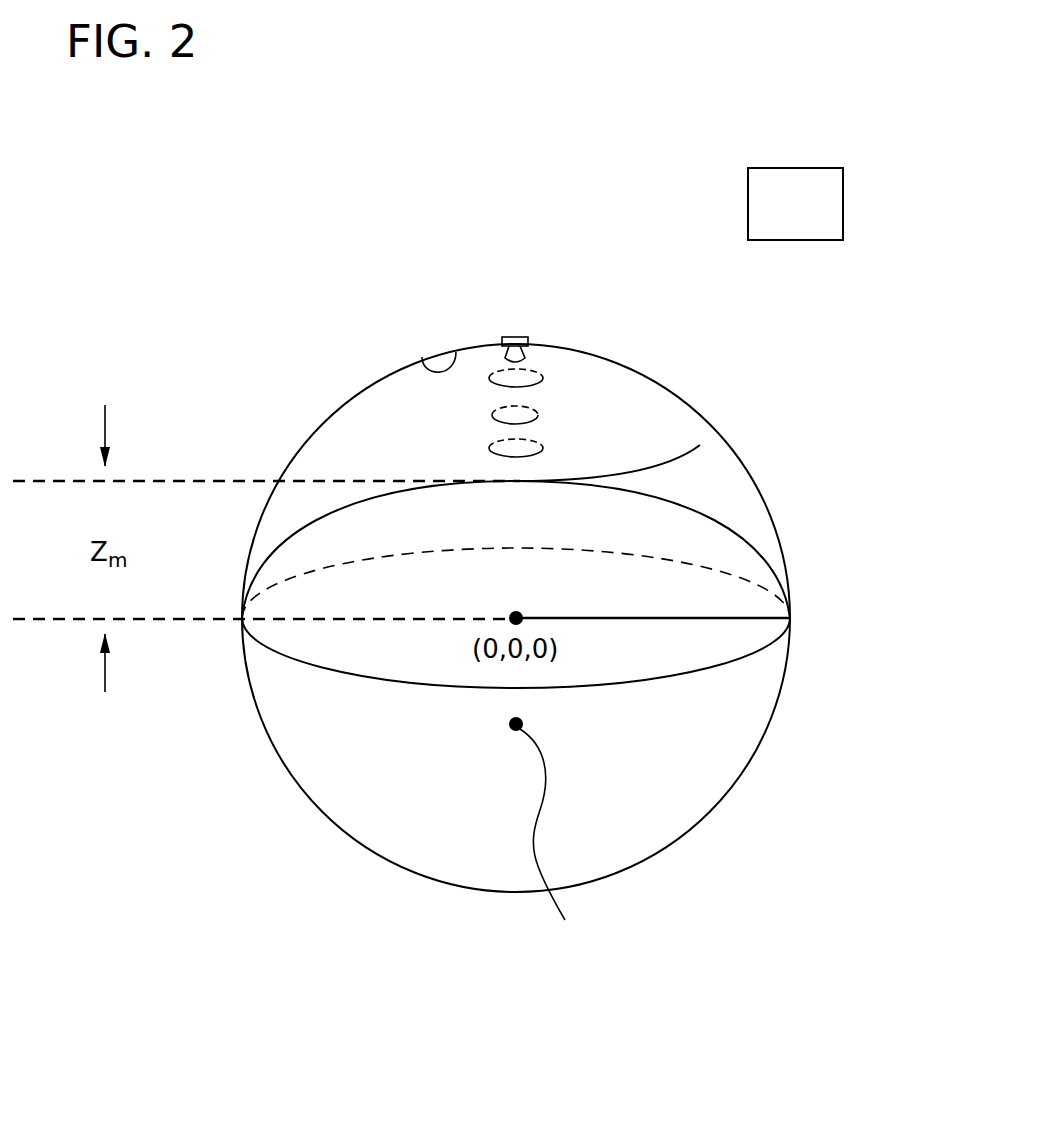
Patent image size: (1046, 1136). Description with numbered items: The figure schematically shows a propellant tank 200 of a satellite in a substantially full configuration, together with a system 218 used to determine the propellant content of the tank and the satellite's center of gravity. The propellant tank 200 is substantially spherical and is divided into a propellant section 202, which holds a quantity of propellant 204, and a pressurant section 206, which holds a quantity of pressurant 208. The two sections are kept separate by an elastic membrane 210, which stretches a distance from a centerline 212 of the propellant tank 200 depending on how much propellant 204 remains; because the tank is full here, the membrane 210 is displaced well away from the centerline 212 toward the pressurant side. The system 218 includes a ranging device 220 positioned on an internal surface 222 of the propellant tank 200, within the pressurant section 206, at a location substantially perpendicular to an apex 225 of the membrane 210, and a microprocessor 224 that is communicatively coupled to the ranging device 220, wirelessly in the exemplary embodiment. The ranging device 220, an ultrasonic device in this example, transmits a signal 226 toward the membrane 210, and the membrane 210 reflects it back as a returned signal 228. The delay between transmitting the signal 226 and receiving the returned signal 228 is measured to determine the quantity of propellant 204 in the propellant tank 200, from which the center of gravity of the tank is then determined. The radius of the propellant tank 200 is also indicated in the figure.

The propellant tank 200 is at (328, 822).
The propellant section 202 is at (618, 753).
The propellant 204 is at (442, 748).
The pressurant section 206 is at (380, 422).
The pressurant 208 is at (628, 423).
The elastic membrane 210 is at (725, 525).
The centerline 212 is at (708, 620).
The system 218 is at (578, 150).
The ranging device 220 is at (525, 337).
The internal surface 222 is at (420, 362).
The microprocessor 224 is at (843, 185).
The apex 225 is at (700, 445).
The signal 226 is at (527, 386).
The signal 228 is at (541, 375).